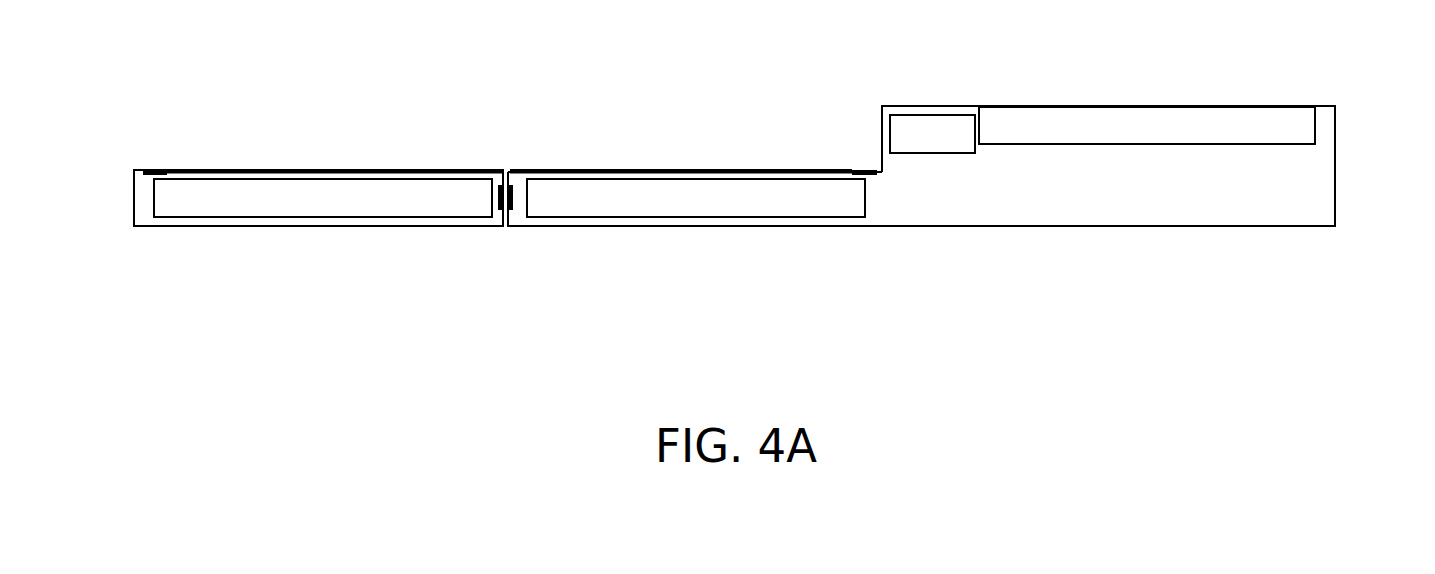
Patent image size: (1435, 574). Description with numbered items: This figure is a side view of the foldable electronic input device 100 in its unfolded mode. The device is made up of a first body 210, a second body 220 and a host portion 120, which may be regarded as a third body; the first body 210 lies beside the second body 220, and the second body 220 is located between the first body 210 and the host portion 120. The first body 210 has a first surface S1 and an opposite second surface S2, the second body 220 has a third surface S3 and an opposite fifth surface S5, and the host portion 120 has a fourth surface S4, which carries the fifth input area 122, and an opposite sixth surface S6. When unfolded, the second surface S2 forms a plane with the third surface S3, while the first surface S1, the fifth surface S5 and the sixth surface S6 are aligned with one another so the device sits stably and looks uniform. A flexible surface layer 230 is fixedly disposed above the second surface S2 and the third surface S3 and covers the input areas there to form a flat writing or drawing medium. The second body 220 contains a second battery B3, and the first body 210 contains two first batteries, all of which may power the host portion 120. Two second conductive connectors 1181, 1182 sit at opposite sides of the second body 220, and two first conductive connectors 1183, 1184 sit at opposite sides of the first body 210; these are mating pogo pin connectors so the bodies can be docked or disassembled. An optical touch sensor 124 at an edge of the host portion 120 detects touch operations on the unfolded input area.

The foldable electronic input device 100 is at (1290, 63).
The host portion 120 is at (1337, 171).
The fifth input area 122 is at (1035, 128).
The optical touch sensor 124 is at (927, 128).
The second conductive connector 1181 is at (858, 170).
The second conductive connector 1182 is at (513, 197).
The first conductive connector 1183 is at (498, 197).
The first conductive connector 1184 is at (157, 170).
The first body 210 is at (146, 200).
The second body 220 is at (820, 227).
The surface layer 230 is at (342, 170).
The first surface S1 is at (240, 228).
The second surface S2 is at (242, 169).
The third surface S3 is at (632, 169).
The fourth surface S4 is at (1164, 105).
The fifth surface S5 is at (633, 228).
The sixth surface S6 is at (1163, 227).
The second battery B3 is at (735, 205).